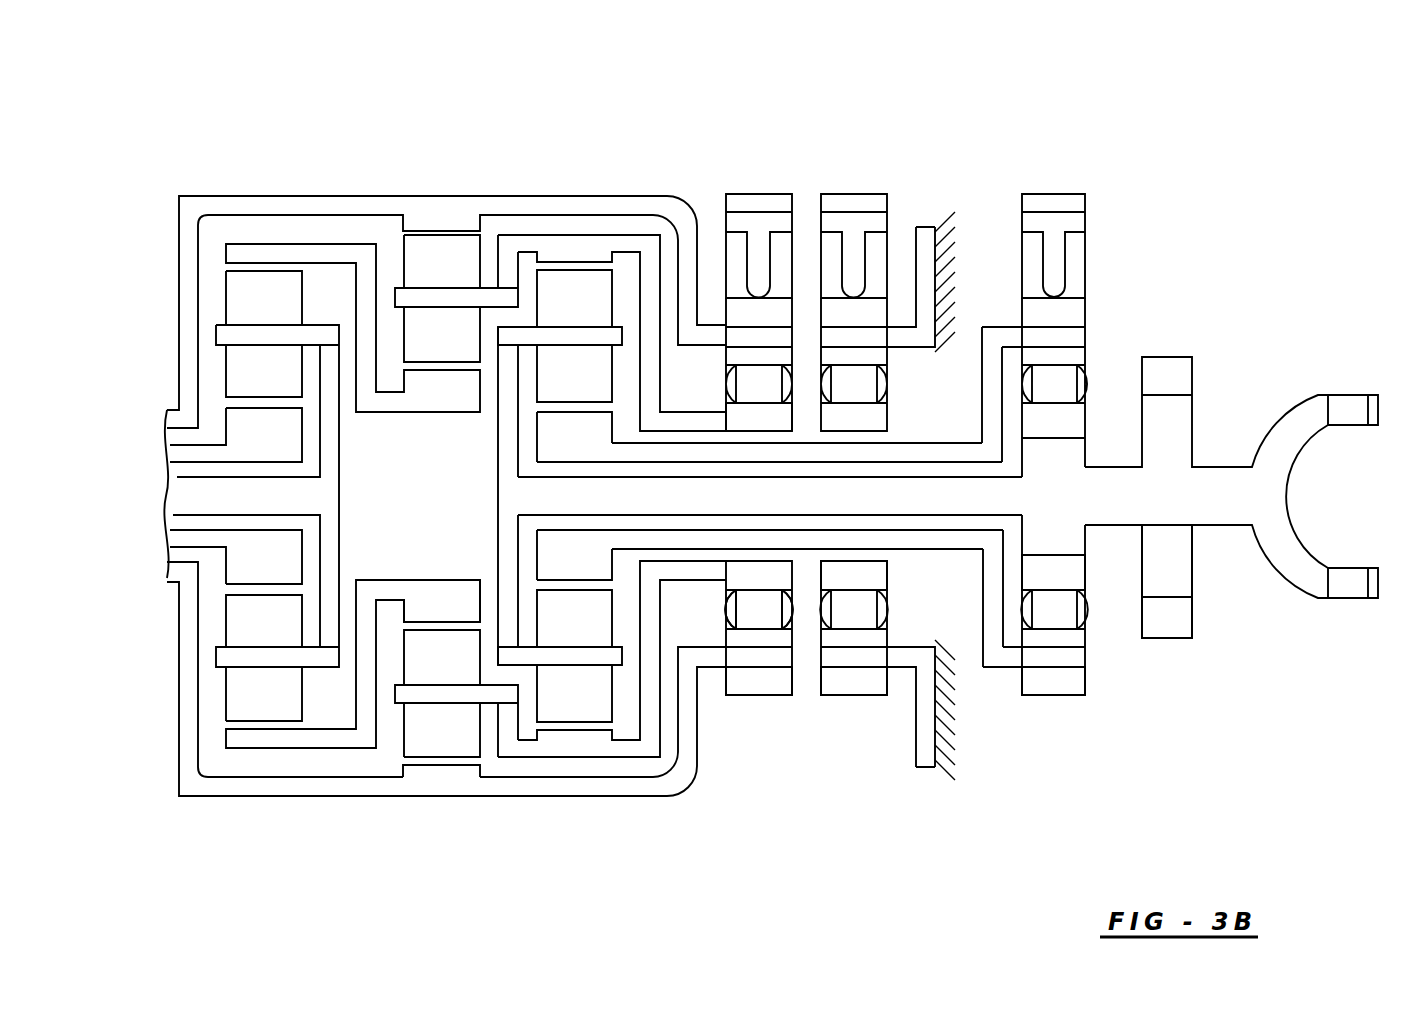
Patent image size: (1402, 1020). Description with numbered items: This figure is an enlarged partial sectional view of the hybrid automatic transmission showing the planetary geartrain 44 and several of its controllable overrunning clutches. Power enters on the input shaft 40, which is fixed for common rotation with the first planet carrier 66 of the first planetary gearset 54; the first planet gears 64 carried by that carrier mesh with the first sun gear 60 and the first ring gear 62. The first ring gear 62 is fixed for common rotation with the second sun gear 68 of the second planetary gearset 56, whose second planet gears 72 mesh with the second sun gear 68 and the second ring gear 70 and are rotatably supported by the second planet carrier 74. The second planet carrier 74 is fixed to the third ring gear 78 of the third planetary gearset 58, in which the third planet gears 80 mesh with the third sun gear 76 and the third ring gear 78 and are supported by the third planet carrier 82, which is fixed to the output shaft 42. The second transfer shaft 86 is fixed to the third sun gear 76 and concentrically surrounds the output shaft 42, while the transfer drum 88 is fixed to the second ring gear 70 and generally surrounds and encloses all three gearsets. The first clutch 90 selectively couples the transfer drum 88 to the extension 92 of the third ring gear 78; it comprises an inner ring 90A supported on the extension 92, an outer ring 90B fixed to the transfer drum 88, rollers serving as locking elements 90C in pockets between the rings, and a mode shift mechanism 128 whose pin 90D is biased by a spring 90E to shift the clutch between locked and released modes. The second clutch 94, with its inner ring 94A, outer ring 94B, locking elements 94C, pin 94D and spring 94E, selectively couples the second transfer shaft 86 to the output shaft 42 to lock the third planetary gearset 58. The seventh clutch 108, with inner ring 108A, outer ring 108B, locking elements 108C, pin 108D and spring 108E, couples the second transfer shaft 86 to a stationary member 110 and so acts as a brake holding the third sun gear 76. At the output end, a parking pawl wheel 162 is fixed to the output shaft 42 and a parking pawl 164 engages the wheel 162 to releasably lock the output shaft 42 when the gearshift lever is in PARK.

The input shaft 40 is at (187, 497).
The output shaft 42 is at (1231, 507).
The planetary geartrain 44 is at (391, 176).
The first planetary gearset 54 is at (212, 236).
The second planetary gearset 56 is at (393, 758).
The third planetary gearset 58 is at (632, 716).
The first sun gear 60 is at (252, 435).
The first ring gear 62 is at (250, 252).
The first planet gears 64 is at (255, 625).
The first planet carrier 66 is at (332, 440).
The second sun gear 68 is at (442, 595).
The second ring gear 70 is at (465, 782).
The second planet gears 72 is at (460, 253).
The second planet carrier 74 is at (512, 730).
The third sun gear 76 is at (577, 440).
The third ring gear 78 is at (575, 248).
The third planet gears 80 is at (583, 702).
The third planet carrier 82 is at (510, 447).
The second transfer shaft 86 is at (775, 453).
The transfer drum 88 is at (228, 785).
The first clutch 90 is at (730, 436).
The inner ring 90A is at (735, 405).
The outer ring 90B is at (760, 680).
The locking elements 90C is at (752, 608).
The pin 90D is at (755, 223).
The spring 90E is at (742, 253).
The extension of third ring gear 92 is at (688, 418).
The second clutch 94 is at (1070, 473).
The inner ring 94A is at (1055, 568).
The outer ring 94B is at (1043, 680).
The locking elements 94C is at (1060, 612).
The pin 94D is at (1052, 255).
The spring 94E is at (1075, 250).
The seventh clutch 108 is at (903, 445).
The inner ring 108A is at (870, 563).
The outer ring 108B is at (857, 678).
The locking elements 108C is at (862, 612).
The pin 108D is at (853, 202).
The spring 108E is at (888, 250).
The stationary member 110 is at (923, 233).
The mode shift mechanism 128 is at (827, 413).
The parking pawl wheel 162 is at (1168, 563).
The parking pawl 164 is at (1173, 618).